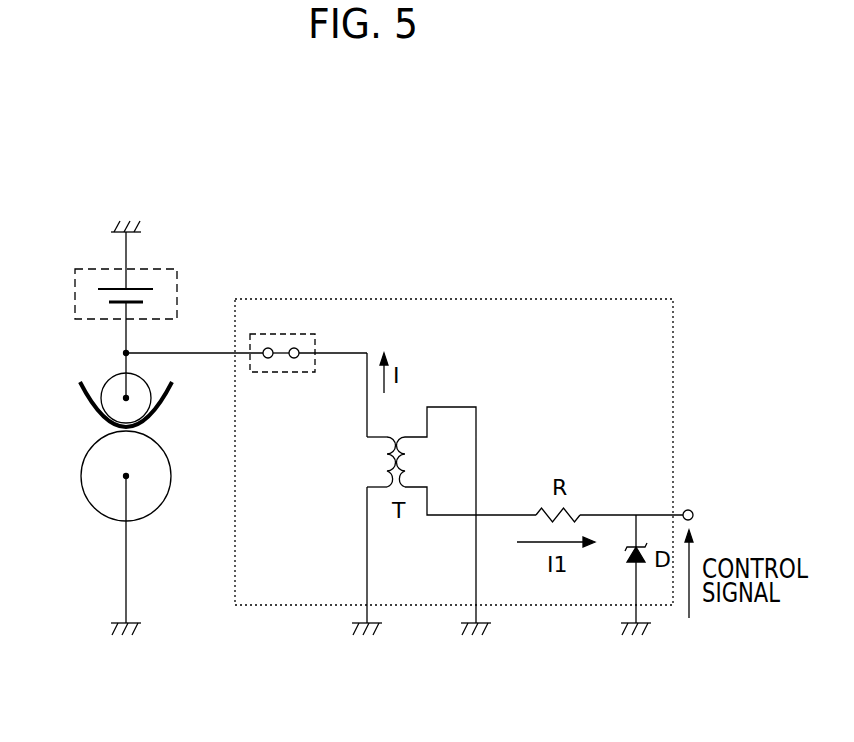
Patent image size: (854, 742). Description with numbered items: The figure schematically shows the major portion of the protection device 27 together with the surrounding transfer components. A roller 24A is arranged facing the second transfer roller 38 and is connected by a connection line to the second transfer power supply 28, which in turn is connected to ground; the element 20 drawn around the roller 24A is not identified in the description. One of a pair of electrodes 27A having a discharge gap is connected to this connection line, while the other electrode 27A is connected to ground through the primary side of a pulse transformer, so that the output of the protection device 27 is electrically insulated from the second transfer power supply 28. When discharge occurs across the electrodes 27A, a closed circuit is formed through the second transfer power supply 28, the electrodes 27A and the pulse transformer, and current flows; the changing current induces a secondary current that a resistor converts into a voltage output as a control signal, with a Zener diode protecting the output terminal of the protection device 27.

The second transfer power supply 28 is at (180, 285).
The roller 24A is at (112, 376).
The cleaning member 20 is at (88, 414).
The second transfer roller 38 is at (150, 510).
The protection device 27 is at (580, 298).
The pair of electrodes 27A is at (280, 373).